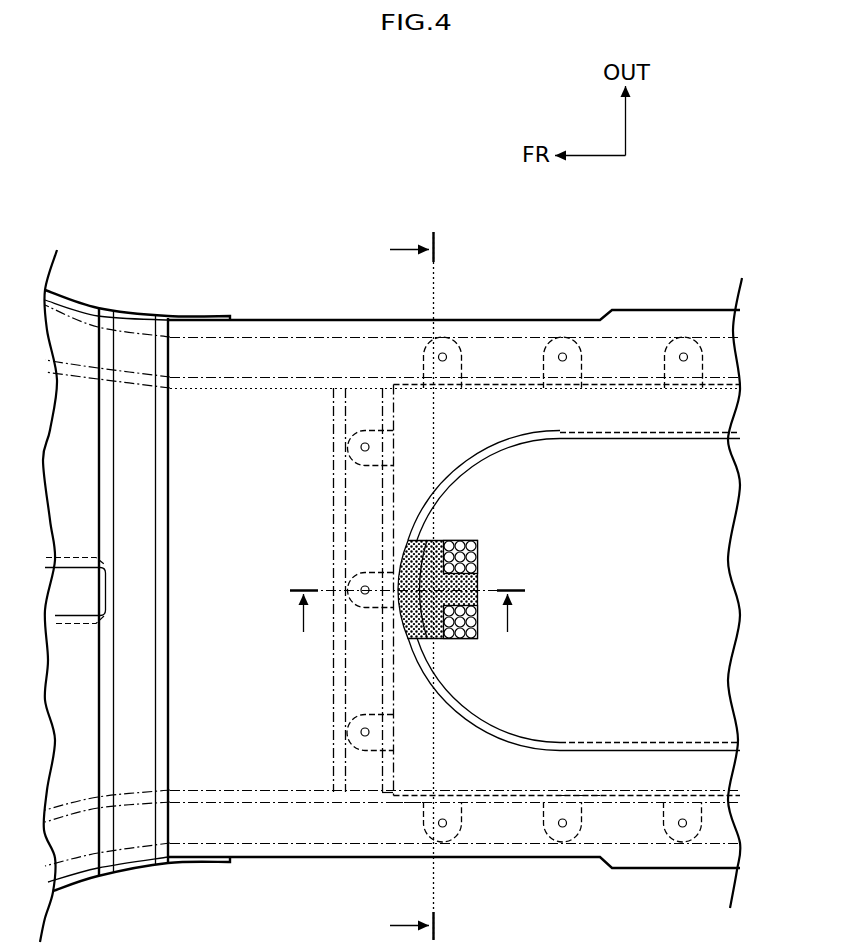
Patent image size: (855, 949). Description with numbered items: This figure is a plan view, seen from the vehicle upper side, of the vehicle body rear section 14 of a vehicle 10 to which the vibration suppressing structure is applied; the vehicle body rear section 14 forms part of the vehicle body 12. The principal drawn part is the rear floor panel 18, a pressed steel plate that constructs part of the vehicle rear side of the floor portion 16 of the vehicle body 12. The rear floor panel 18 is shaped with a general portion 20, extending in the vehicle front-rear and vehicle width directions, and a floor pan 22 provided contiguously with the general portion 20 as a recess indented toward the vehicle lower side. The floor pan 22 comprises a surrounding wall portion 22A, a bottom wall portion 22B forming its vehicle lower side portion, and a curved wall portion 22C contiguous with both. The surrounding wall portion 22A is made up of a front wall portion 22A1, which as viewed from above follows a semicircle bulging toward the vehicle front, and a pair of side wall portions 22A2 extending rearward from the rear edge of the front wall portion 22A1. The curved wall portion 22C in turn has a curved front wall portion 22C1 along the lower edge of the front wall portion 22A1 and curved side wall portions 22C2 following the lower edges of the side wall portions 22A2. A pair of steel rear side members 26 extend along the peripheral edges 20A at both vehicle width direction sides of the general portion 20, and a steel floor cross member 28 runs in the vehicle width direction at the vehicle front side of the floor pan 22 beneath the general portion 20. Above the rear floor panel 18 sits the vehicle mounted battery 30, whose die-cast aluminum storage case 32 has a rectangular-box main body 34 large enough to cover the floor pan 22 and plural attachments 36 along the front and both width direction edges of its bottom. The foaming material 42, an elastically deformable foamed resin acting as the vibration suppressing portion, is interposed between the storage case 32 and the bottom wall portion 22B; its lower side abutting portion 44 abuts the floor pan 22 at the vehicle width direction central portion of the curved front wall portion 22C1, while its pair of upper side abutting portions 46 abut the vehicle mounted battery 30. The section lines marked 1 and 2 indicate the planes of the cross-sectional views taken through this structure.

The section line 1- 1 is at (403, 586).
The section line 2- 2 is at (407, 628).
The vehicle 10 is at (629, 240).
The vehicle body 12 is at (685, 544).
The vehicle body rear section 14 is at (458, 245).
The floor portion 16 is at (262, 319).
The rear floor panel 18 is at (182, 595).
The general portion 20 is at (564, 762).
The peripheral edges 20A is at (722, 358).
The floor pan 22 is at (697, 497).
The surrounding wall portion 22A is at (487, 446).
The front wall portion 22A1 is at (419, 513).
The side wall portions 22A2 is at (612, 440).
The bottom wall portion 22B is at (704, 618).
The curved wall portion 22C is at (496, 736).
The curved front wall portion 22C1 is at (440, 695).
The curved side wall portions 22C2 is at (718, 432).
The rear side members 26 is at (722, 321).
The floor cross member 28 is at (358, 503).
The vehicle mounted battery 30 is at (383, 816).
The storage case 32 is at (386, 773).
The main body 34 is at (722, 777).
The attachments 36 is at (443, 342).
The foaming material 42 is at (480, 577).
The lower side abutting portion 44 is at (412, 613).
The upper side abutting portions 46 is at (480, 547).